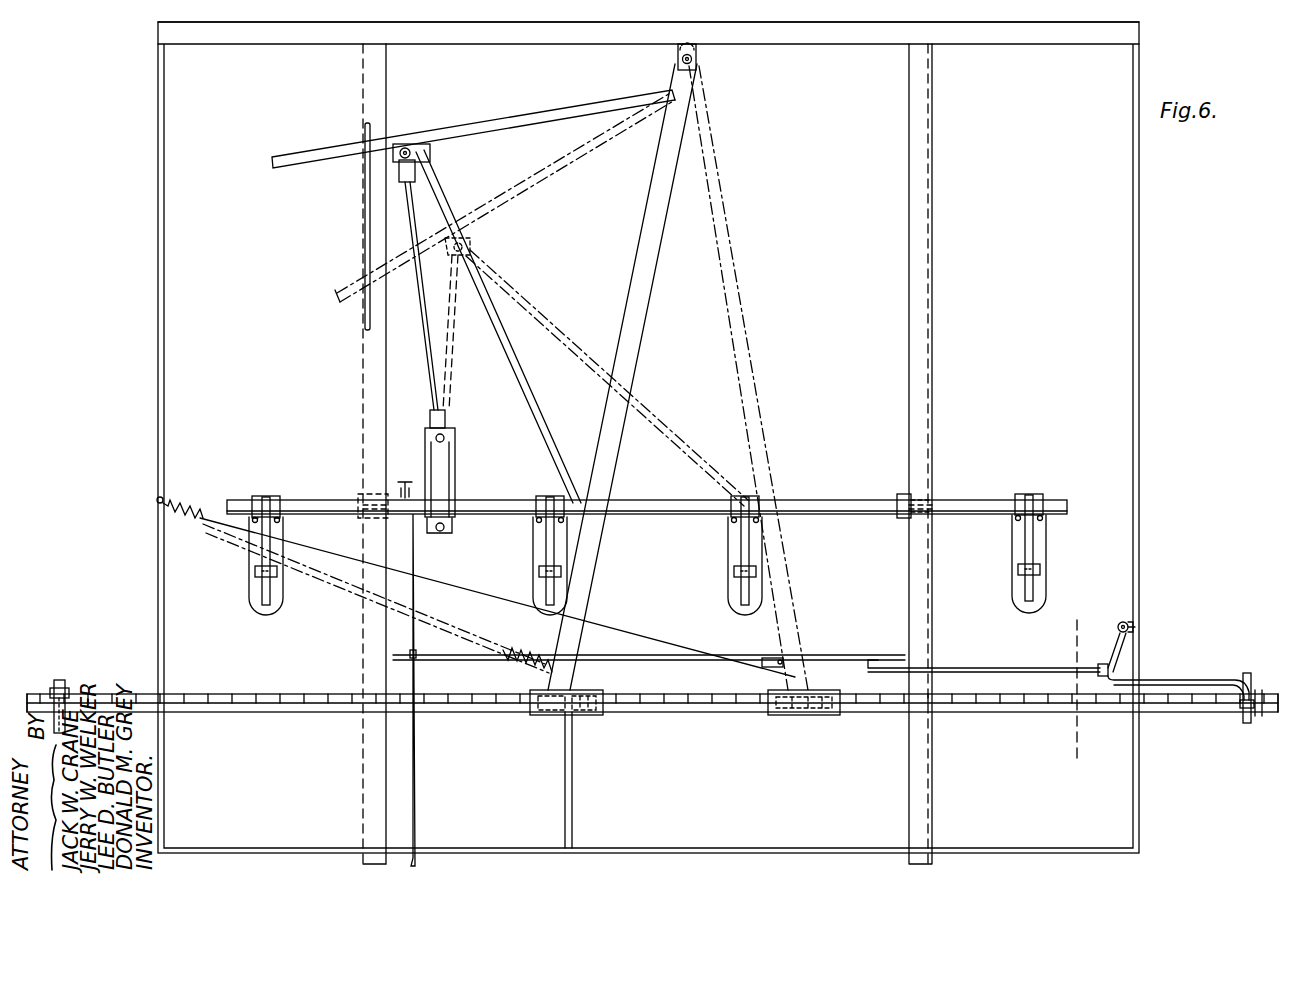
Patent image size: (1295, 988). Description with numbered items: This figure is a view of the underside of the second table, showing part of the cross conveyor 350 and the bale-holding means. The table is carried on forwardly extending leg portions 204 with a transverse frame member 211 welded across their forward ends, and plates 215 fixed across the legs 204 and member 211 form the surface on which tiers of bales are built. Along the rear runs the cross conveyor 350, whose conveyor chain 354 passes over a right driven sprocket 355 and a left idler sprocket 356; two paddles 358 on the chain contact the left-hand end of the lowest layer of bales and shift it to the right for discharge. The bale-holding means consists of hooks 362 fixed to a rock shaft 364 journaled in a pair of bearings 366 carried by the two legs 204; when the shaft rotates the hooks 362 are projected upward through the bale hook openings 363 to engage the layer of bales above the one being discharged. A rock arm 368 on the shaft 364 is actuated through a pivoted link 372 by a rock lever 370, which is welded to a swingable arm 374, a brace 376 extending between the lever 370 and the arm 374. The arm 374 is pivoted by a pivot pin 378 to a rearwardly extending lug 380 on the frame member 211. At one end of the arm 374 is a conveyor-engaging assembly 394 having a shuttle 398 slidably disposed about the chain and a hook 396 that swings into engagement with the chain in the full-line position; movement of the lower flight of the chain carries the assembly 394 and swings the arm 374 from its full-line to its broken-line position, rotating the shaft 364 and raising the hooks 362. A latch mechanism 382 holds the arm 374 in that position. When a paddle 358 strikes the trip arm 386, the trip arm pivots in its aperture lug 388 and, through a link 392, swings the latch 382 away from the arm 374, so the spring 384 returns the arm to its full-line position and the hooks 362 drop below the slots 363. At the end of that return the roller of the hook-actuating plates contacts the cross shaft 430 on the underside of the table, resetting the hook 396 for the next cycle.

The forwardly extending leg portion 204 is at (362, 75).
The transverse frame member 211 is at (985, 32).
The plates 215 is at (1112, 333).
The cross conveyor 350 is at (319, 724).
The conveyor chain 354 is at (708, 702).
The right driven sprocket 355 is at (27, 696).
The left idler sprocket 356 is at (1280, 712).
The paddles 358 is at (61, 682).
The hooks 362 is at (262, 557).
The bale hook openings 363 is at (258, 592).
The rock shaft 364 is at (832, 498).
The bearings 366 is at (368, 494).
The rock arm 368 is at (456, 455).
The rock lever 370 is at (515, 98).
The pivoted link 372 is at (405, 200).
The swingable arm 374 is at (650, 210).
The brace 376 is at (503, 346).
The pivot pin 378 is at (698, 70).
The rearwardly extending lug 380 is at (700, 50).
The latch mechanism 382 is at (850, 656).
The spring 384 is at (342, 590).
The trip arm 386 is at (1168, 682).
The aperture lug 388 is at (1121, 622).
The link 392 is at (985, 664).
The conveyor-engaging assembly 394 is at (536, 727).
The hook 396 is at (614, 702).
The shuttle 398 is at (586, 716).
The cross shaft 430 is at (572, 784).